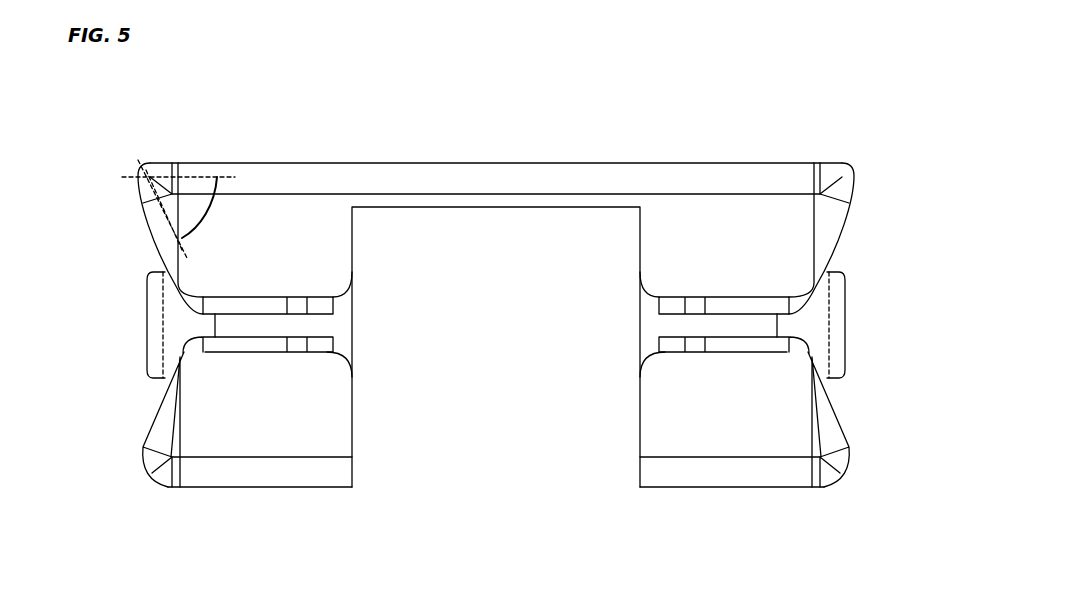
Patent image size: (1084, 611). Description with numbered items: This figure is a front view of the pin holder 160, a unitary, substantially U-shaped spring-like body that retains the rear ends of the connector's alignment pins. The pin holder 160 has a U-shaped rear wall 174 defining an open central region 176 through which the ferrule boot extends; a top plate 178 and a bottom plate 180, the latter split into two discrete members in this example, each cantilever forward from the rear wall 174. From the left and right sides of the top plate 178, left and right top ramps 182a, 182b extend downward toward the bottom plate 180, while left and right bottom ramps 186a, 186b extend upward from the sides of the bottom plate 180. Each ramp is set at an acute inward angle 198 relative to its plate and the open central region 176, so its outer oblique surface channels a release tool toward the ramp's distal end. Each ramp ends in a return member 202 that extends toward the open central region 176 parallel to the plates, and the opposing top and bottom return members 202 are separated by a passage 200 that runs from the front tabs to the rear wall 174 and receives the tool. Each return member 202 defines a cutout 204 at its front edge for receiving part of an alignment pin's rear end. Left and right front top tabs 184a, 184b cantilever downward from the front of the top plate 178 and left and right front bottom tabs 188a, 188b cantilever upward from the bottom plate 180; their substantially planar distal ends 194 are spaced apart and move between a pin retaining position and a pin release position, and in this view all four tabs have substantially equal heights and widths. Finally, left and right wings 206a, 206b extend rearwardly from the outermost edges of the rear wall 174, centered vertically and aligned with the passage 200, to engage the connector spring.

The pin holder 160 is at (830, 94).
The rear wall 174 is at (647, 313).
The open central region 176 is at (462, 406).
The top plate 178 is at (413, 162).
The bottom plate 180 is at (262, 488).
The left top ramp 182a is at (158, 235).
The right top ramp 182b is at (840, 232).
The left front top tab 184a is at (330, 262).
The right front top tab 184b is at (680, 265).
The left bottom ramp 186a is at (148, 425).
The right bottom ramp 186b is at (840, 425).
The left front bottom tab 188a is at (331, 419).
The right front bottom tab 188b is at (665, 438).
The distal ends 194 is at (700, 352).
The angle 198 is at (207, 208).
The passage 200 is at (166, 323).
The return member 202 is at (334, 307).
The cutout 204 is at (749, 284).
The left wing 206a is at (148, 306).
The right wing 206b is at (848, 325).